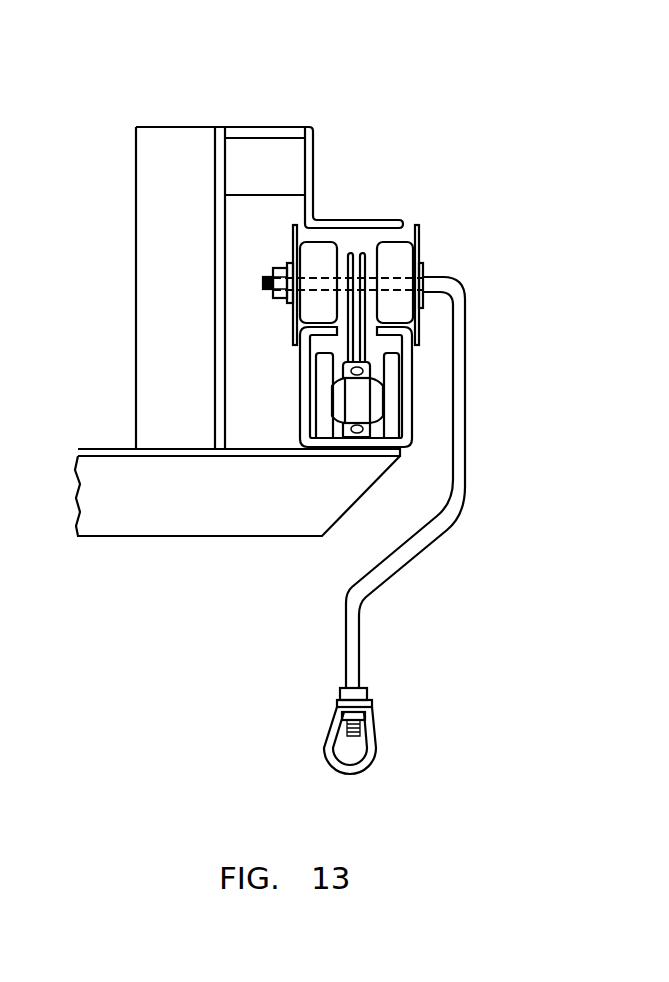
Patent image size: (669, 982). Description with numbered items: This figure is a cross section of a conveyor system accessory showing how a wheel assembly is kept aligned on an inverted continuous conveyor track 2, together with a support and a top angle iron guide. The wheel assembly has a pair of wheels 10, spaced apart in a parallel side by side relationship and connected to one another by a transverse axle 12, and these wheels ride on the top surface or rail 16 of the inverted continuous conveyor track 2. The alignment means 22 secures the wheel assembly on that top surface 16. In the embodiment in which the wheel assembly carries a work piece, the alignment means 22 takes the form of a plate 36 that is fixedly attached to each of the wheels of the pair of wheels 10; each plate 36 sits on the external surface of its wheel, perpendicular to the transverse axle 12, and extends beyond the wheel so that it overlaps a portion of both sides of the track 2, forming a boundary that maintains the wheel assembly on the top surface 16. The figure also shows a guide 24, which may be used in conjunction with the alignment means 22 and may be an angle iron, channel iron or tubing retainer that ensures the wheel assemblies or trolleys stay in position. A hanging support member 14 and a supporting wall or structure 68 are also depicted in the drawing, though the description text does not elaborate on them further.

The inverted continuous conveyor track 2 is at (408, 440).
The pair of wheels 10 is at (355, 280).
The transverse axle 12 is at (455, 212).
The hook bracket 14 is at (435, 537).
The top surface 16 is at (385, 330).
The alignment means 22 is at (455, 212).
The guide 24 is at (317, 150).
The plate 36 is at (418, 242).
The wall 68 is at (118, 537).